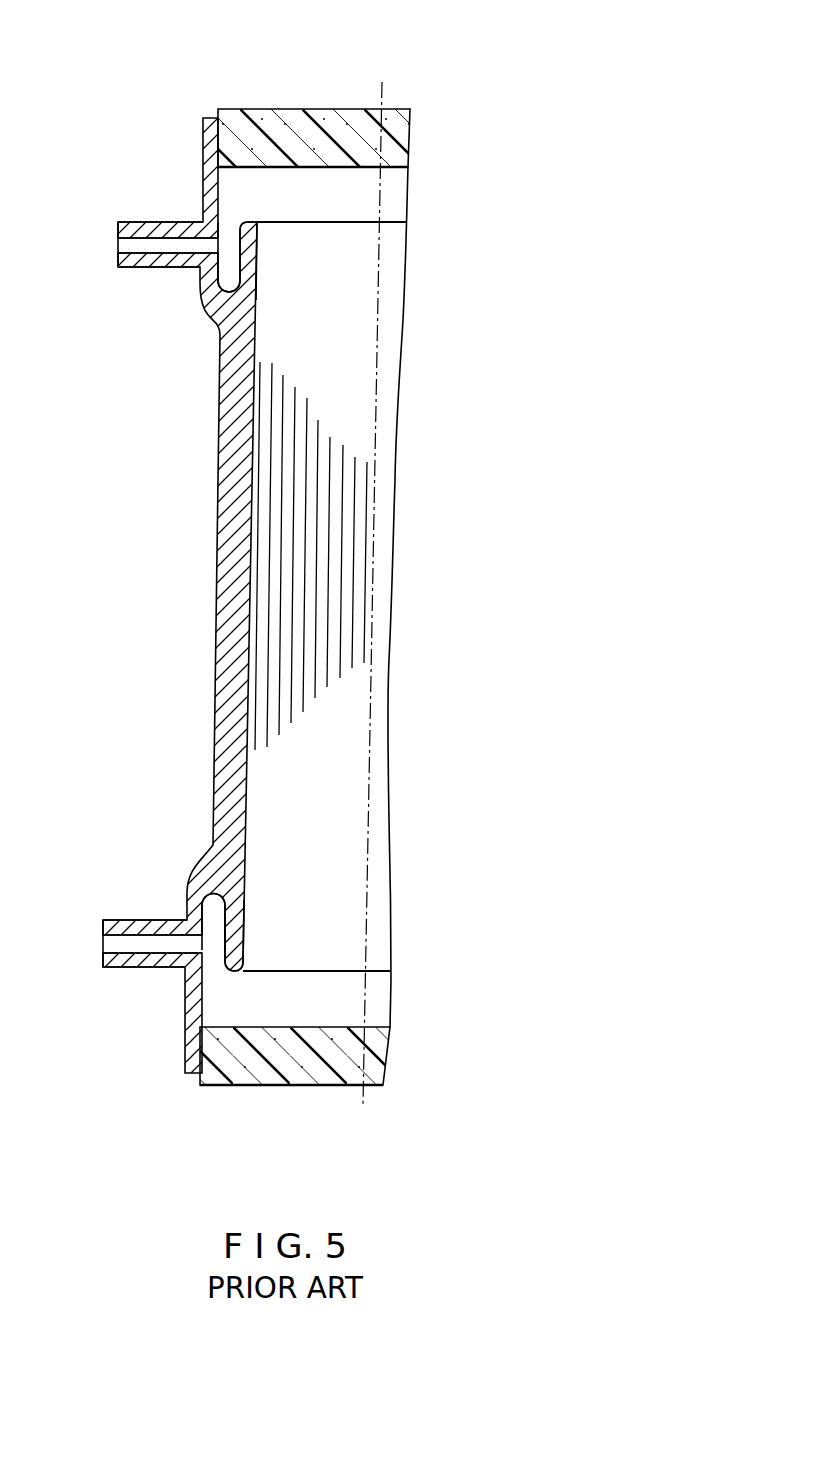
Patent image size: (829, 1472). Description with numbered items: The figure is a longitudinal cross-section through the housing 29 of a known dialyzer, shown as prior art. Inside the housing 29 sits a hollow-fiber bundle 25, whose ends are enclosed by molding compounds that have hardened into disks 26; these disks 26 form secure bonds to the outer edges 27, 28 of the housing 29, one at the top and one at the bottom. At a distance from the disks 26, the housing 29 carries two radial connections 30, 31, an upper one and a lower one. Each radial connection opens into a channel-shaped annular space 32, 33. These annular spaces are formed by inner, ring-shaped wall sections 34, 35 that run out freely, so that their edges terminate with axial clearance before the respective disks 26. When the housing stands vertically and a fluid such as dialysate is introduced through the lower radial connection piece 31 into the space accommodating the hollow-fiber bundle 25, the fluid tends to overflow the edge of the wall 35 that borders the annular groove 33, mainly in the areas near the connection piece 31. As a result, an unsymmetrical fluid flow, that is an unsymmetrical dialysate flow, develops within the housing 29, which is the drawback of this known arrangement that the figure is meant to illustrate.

The hollow-fiber bundle 25 is at (358, 595).
The disks 26 is at (305, 127).
The outer edge of housing 27 is at (205, 133).
The outer edge of housing 28 is at (190, 1063).
The housing 29 is at (233, 622).
The radial connection 30 is at (135, 270).
The radial connection piece 31 is at (133, 958).
The annular space 32 is at (258, 297).
The annular groove 33 is at (238, 918).
The ring-shaped wall section 34 is at (257, 237).
The ring-shaped wall section 35 is at (240, 955).